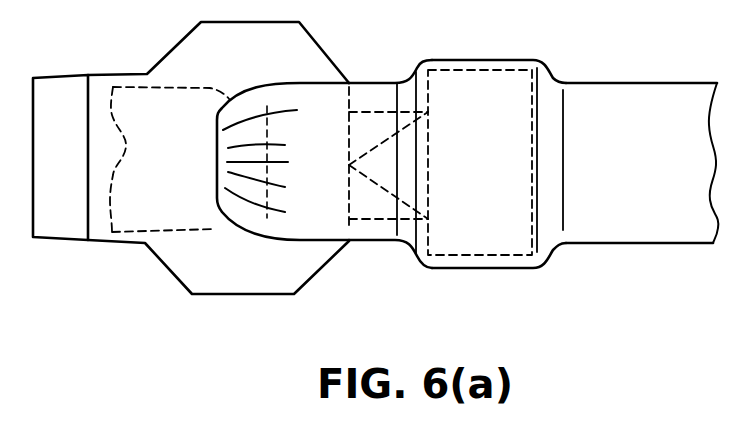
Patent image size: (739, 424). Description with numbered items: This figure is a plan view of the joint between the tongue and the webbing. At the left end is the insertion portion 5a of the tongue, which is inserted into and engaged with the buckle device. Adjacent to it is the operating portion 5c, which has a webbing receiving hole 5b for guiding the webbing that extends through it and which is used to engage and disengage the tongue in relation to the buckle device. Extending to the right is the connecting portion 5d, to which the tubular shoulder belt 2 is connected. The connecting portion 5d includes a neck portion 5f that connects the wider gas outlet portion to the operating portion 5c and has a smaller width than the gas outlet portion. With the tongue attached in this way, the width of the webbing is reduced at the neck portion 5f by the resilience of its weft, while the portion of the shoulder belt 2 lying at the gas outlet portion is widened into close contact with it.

The shoulder belt 2 is at (167, 237).
The insertion portion 5a is at (70, 232).
The webbing receiving hole 5b is at (220, 189).
The operating portion 5c is at (233, 280).
The connecting portion 5d is at (470, 258).
The neck portion 5f is at (368, 222).